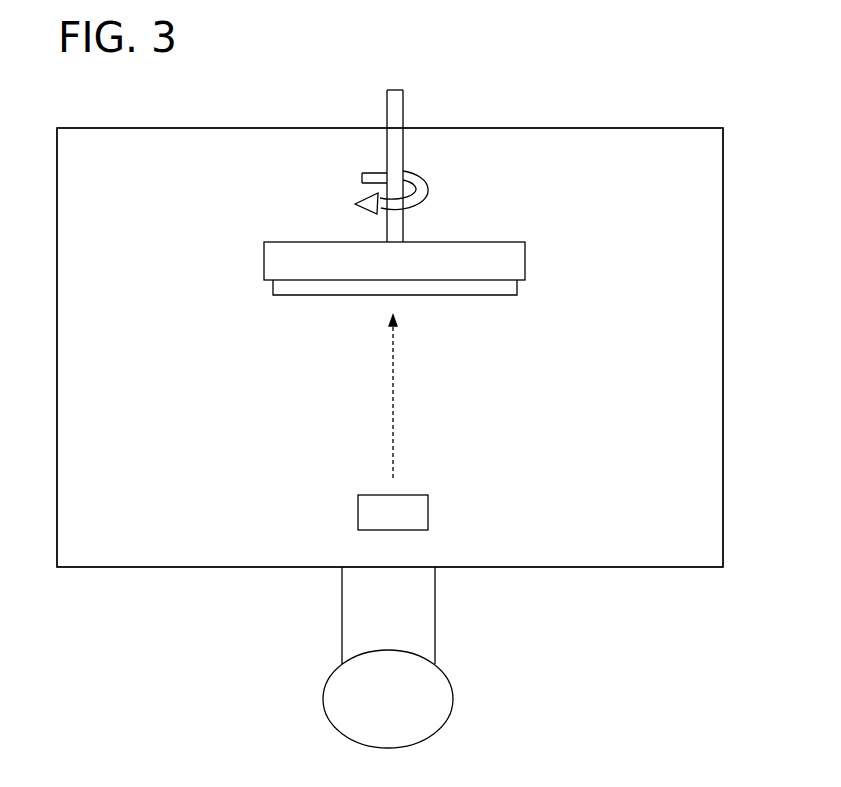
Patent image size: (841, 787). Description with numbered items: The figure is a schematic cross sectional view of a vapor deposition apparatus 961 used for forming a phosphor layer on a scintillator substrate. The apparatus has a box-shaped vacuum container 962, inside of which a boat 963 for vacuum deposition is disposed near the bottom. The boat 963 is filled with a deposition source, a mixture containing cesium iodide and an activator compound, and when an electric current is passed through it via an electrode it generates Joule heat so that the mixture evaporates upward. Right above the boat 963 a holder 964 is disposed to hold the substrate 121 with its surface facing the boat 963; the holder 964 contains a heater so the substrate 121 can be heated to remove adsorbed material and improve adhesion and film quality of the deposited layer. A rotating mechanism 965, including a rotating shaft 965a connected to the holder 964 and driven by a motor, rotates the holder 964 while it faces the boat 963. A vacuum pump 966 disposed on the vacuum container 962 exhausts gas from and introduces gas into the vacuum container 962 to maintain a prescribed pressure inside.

The vapor deposition apparatus 961 is at (453, 83).
The vacuum container 962 is at (724, 235).
The boat 963 is at (430, 510).
The holder 964 is at (527, 258).
The substrate 121 is at (520, 284).
The rotating mechanism 965 is at (414, 163).
The rotating shaft 965a is at (390, 155).
The vacuum pump 966 is at (455, 697).